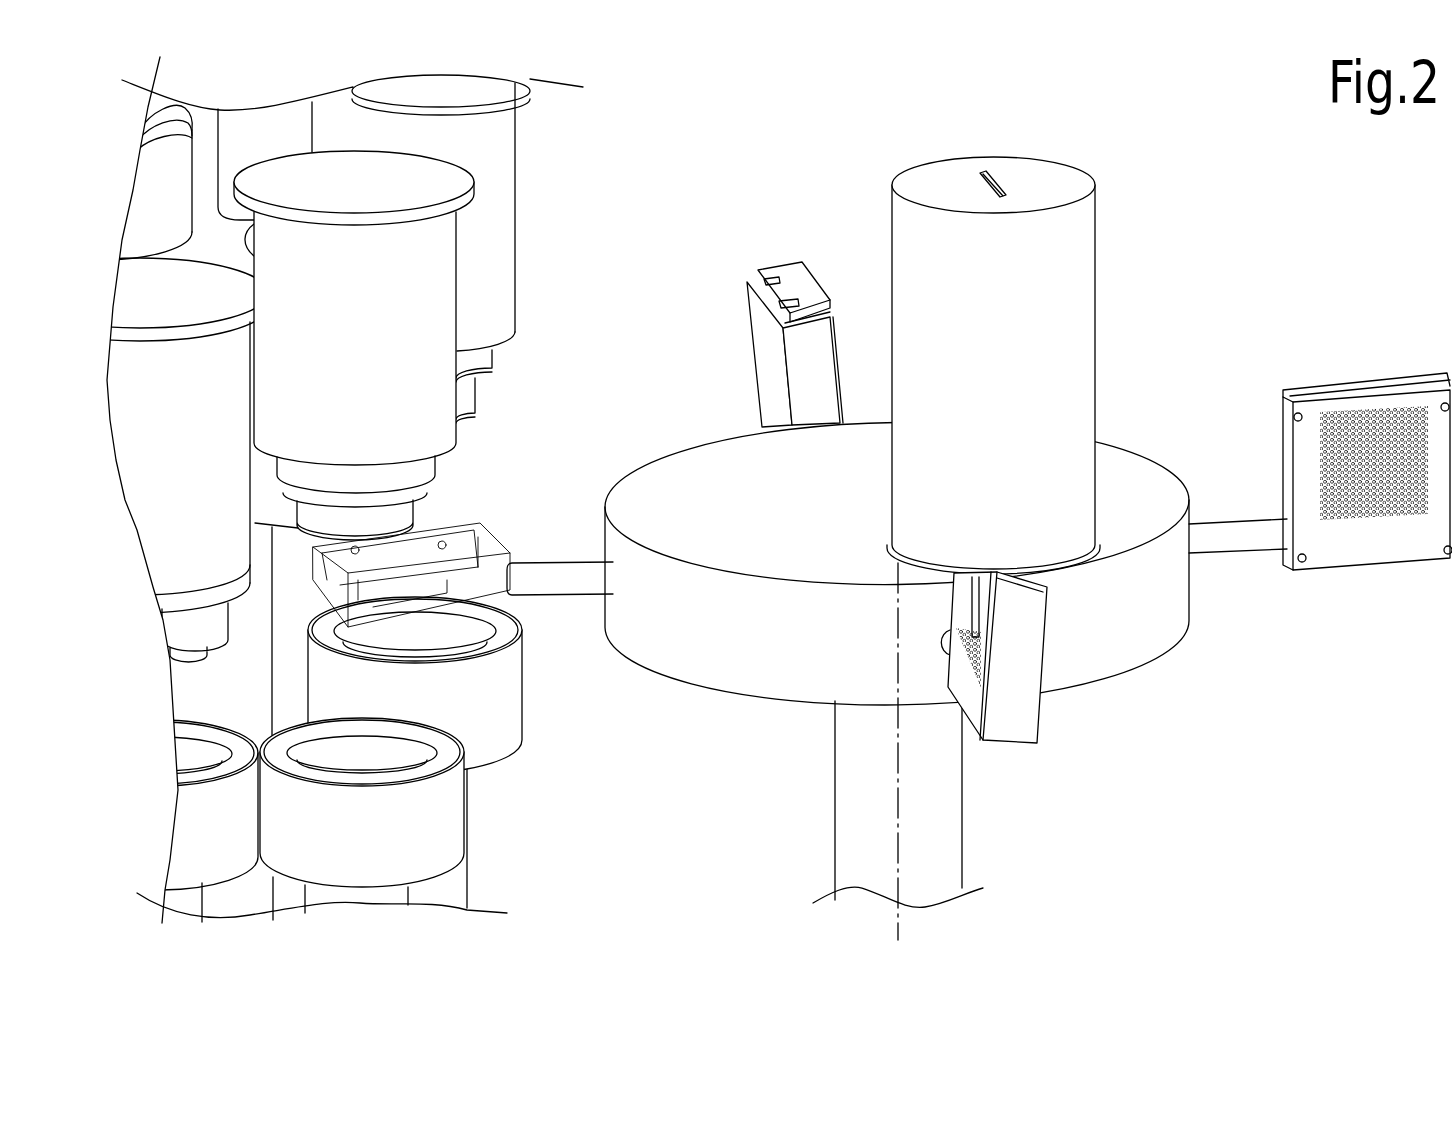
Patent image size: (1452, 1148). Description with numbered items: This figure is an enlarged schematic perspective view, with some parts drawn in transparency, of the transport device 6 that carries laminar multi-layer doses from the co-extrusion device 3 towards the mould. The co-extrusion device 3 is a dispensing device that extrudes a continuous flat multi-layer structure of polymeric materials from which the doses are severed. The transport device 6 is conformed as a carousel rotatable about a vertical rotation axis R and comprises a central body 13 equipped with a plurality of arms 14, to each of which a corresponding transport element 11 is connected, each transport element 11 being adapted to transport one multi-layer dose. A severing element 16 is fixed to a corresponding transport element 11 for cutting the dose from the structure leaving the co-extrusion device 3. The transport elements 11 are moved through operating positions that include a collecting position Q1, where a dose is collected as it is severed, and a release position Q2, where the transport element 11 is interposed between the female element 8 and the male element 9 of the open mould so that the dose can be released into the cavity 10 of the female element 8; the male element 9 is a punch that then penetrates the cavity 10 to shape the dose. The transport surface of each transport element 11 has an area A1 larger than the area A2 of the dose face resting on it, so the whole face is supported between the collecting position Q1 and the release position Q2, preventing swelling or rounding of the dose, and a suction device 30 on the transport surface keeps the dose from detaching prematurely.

The co-extrusion device 3 is at (1067, 243).
The transport device 6 is at (751, 766).
The female element 8 is at (412, 817).
The male element 9 is at (412, 282).
The cavity 10 is at (337, 748).
The transport element 11 is at (760, 342).
The central body 13 is at (1132, 488).
The arm 14 is at (555, 588).
The severing element 16 is at (813, 273).
The suction device 30 is at (1306, 465).
The area of the transport surface A1 is at (968, 687).
The area of a face of the multi-layer dose A2 is at (420, 587).
The collecting position Q1 is at (1072, 656).
The release position Q2 is at (482, 495).
The rotation axis R is at (897, 850).